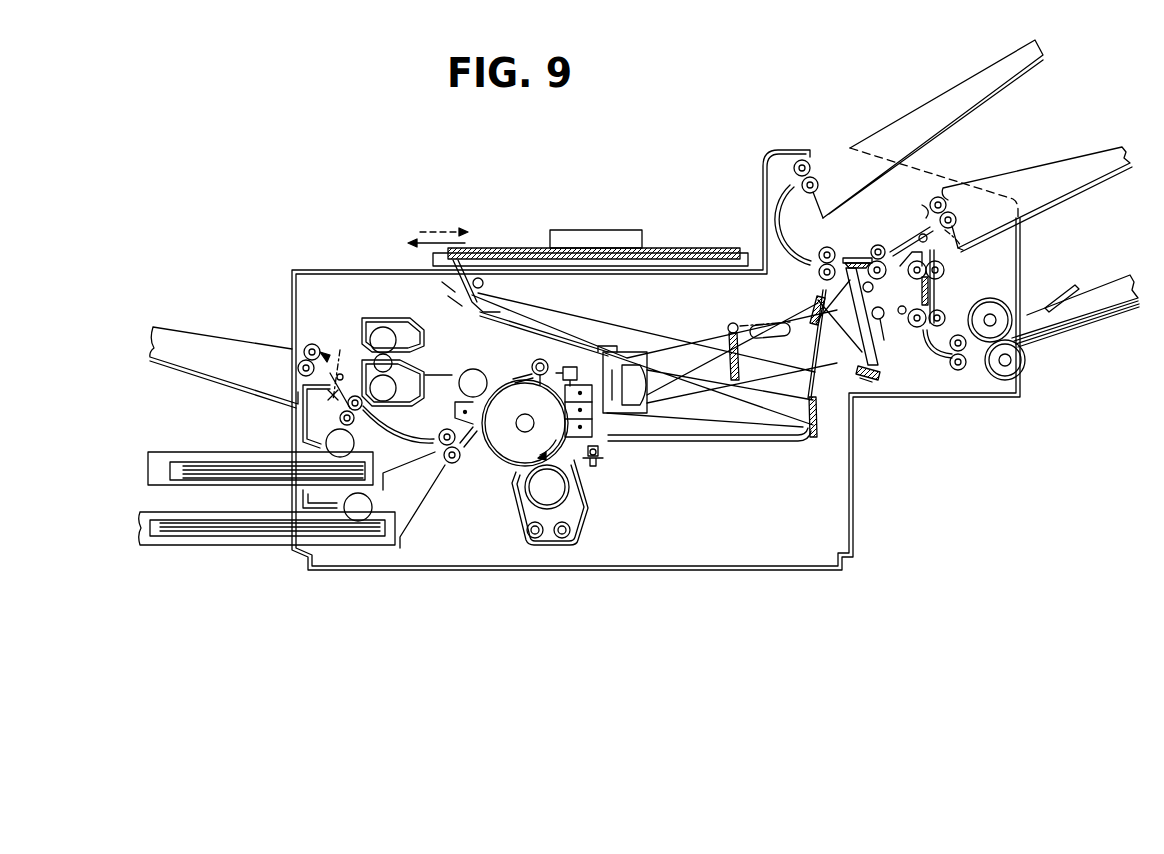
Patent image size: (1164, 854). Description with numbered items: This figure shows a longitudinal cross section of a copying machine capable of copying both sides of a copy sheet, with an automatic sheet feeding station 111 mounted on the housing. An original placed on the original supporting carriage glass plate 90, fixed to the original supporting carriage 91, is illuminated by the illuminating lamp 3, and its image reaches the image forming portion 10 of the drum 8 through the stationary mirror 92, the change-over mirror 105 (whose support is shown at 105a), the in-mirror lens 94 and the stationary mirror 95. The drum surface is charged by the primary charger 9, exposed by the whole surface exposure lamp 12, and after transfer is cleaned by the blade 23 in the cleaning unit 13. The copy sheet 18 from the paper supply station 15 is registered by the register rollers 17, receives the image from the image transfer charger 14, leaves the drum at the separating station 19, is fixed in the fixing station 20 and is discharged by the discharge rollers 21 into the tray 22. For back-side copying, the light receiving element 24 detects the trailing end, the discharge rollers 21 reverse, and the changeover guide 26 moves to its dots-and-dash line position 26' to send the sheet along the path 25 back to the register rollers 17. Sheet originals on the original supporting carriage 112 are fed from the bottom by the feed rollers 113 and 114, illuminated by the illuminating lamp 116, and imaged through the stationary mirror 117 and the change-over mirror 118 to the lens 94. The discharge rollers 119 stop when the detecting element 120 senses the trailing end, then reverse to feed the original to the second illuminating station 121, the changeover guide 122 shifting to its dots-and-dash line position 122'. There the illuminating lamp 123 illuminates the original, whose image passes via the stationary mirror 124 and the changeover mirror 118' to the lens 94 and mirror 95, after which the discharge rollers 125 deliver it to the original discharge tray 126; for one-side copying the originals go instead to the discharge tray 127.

The illuminating lamp 3 is at (485, 283).
The drum 8 is at (494, 465).
The primary charger 9 is at (574, 370).
The image forming portion 10 is at (547, 487).
The whole surface exposure lamp 12 is at (608, 452).
The cleaning unit 13 is at (520, 517).
The image transfer charger 14 is at (452, 413).
The paper supply station 15 is at (903, 275).
The register rollers 17 is at (452, 465).
The copy sheet 18 is at (200, 462).
The separating station 19 is at (496, 380).
The fixing station 20 is at (390, 318).
The discharge rollers 21 is at (312, 344).
The tray 22 is at (208, 362).
The blade 23 is at (537, 360).
The light receiving element 24 is at (326, 352).
The path 25 is at (340, 405).
The changeover guide 26 is at (286, 375).
The dots-and-dash line position 26' is at (349, 358).
The original supporting carriage glass plate 90 is at (597, 248).
The original supporting carriage 91 is at (738, 248).
The stationary mirror 92 is at (470, 308).
The in-mirror lens 94 is at (631, 356).
The stationary mirror 95 is at (806, 438).
The change-over mirror 105 is at (728, 350).
The lamp support arm 105a is at (742, 305).
The automatic sheet feeding station 111 is at (965, 408).
The original supporting carriage 112 is at (1100, 318).
The feed roller 113 is at (982, 305).
The feed roller 114 is at (1026, 362).
The illuminating lamp 116 is at (900, 328).
The stationary mirror 117 is at (815, 305).
The change-over mirror 118 is at (843, 316).
The changeover mirror 118' is at (894, 381).
The discharge rollers 119 is at (938, 197).
The detecting element 120 is at (930, 215).
The second illuminating station 121 is at (822, 280).
The changeover guide 122 is at (899, 232).
The dots-and-dash line position 122' is at (966, 276).
The illuminating lamp 123 is at (853, 258).
The stationary mirror 124 is at (863, 380).
The discharge rollers 125 is at (800, 158).
The original discharge tray 126 is at (966, 98).
The discharge tray 127 is at (1082, 180).